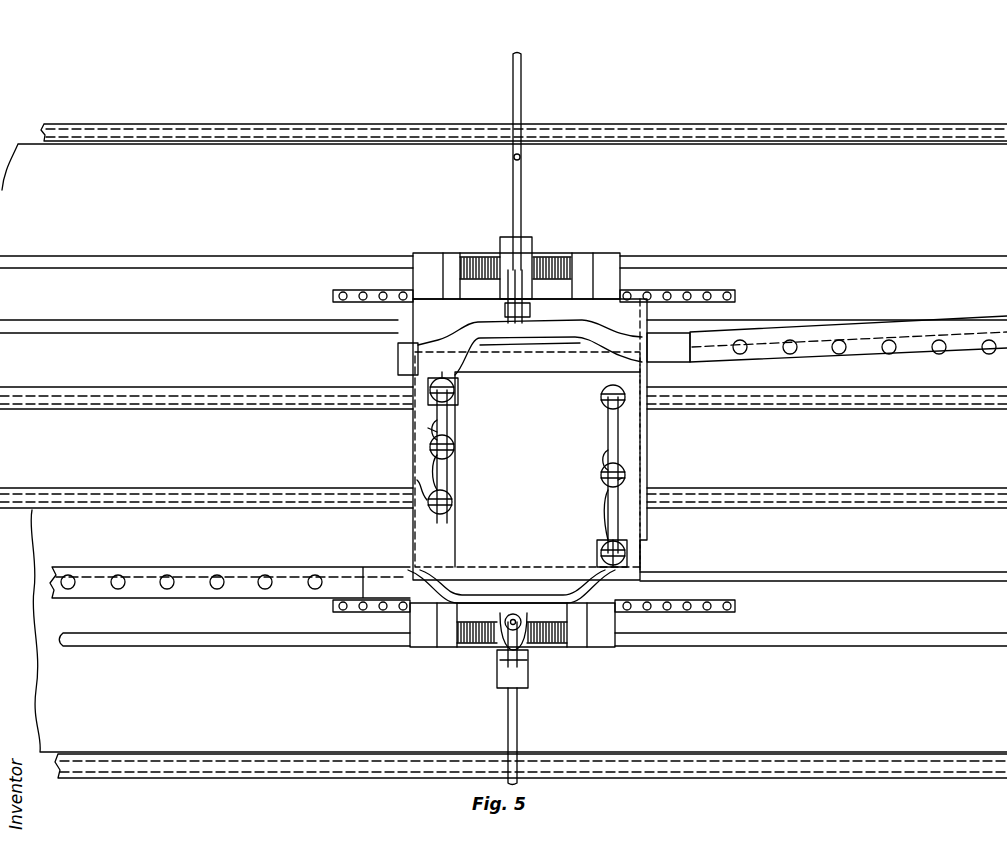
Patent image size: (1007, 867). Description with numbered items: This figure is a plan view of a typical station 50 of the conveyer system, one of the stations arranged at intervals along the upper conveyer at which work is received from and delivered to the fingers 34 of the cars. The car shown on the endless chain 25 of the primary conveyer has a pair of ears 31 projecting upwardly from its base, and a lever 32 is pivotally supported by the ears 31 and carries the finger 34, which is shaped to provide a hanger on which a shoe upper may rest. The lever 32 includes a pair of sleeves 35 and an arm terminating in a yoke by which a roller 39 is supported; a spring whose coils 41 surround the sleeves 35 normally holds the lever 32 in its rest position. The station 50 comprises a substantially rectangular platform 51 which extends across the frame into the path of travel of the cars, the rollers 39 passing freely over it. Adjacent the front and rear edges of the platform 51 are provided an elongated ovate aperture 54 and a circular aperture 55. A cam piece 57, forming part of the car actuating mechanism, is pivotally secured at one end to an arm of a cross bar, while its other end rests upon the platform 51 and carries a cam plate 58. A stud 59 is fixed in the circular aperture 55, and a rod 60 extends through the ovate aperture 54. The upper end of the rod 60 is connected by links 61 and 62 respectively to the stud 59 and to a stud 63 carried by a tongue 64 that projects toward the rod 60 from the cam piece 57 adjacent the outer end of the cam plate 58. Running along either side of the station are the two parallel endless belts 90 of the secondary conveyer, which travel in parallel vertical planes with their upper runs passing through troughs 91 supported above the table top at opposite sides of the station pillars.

The endless chain 25 is at (672, 291).
The ears 31 is at (444, 265).
The lever 32 is at (508, 287).
The finger 34 is at (521, 183).
The sleeves 35 is at (463, 258).
The roller 39 is at (505, 311).
The coils 41 is at (540, 258).
The station 50 is at (655, 449).
The platform 51 is at (547, 469).
The elongated ovate aperture 54 is at (434, 428).
The circular aperture 55 is at (417, 480).
The cam piece 57 is at (247, 578).
The cam plate 58 is at (460, 337).
The stud 59 is at (450, 508).
The rod 60 is at (428, 428).
The link 61 is at (442, 473).
The link 62 is at (447, 428).
The stud 63 is at (453, 378).
The tongue 64 is at (456, 398).
The endless belts 90 is at (504, 448).
The troughs 91 is at (768, 130).